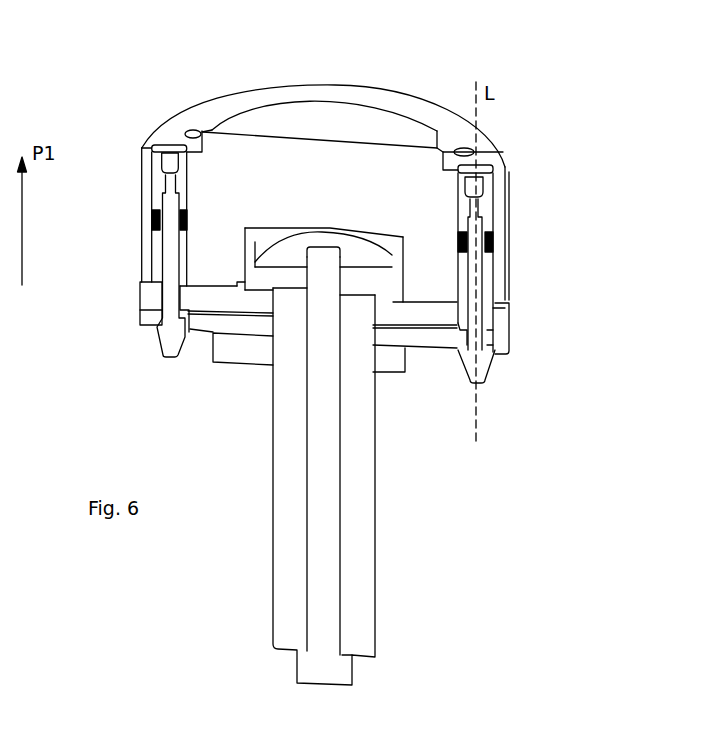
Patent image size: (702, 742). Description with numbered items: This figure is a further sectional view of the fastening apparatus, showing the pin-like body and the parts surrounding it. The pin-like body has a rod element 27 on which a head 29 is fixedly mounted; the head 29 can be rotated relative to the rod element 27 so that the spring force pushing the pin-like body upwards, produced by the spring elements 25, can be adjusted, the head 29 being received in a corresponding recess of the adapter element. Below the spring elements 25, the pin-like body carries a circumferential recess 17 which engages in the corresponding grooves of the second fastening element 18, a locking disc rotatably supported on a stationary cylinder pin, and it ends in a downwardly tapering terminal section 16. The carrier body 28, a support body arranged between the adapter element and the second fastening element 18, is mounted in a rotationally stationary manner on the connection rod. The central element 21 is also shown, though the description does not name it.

The terminal section 16 is at (153, 328).
The circumferential recess 17 is at (160, 350).
The second fastening element 18 is at (400, 337).
The central shaft 21 is at (328, 467).
The spring elements 25 is at (153, 213).
The rod element 27 is at (157, 267).
The carrier body 28 is at (420, 313).
The head 29 is at (157, 158).